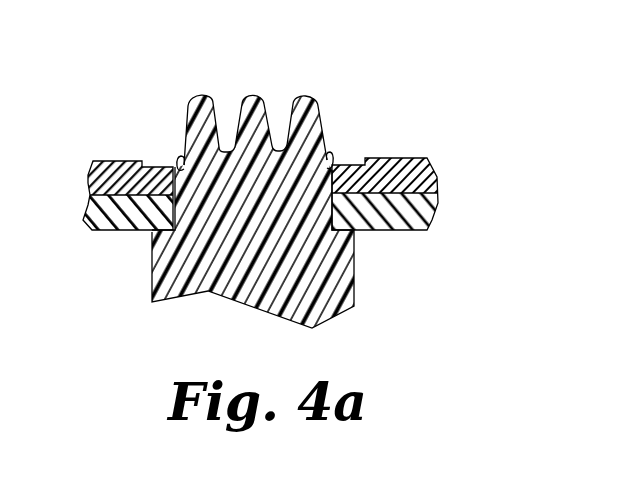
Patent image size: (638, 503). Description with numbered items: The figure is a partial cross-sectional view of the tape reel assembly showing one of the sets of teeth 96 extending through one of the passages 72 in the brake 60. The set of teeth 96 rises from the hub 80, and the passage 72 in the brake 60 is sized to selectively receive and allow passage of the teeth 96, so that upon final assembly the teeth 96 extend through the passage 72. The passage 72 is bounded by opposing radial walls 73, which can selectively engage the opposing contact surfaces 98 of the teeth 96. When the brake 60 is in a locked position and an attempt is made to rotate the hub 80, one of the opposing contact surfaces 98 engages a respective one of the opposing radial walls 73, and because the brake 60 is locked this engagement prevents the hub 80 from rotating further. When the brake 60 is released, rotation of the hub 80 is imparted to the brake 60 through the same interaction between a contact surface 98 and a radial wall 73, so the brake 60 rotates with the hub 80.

The brake 60 is at (440, 158).
The passage 72 is at (160, 162).
The opposing radial walls 73 is at (183, 153).
The hub 80 is at (230, 292).
The set of teeth 96 is at (253, 98).
The opposing contact surfaces 98 is at (190, 107).